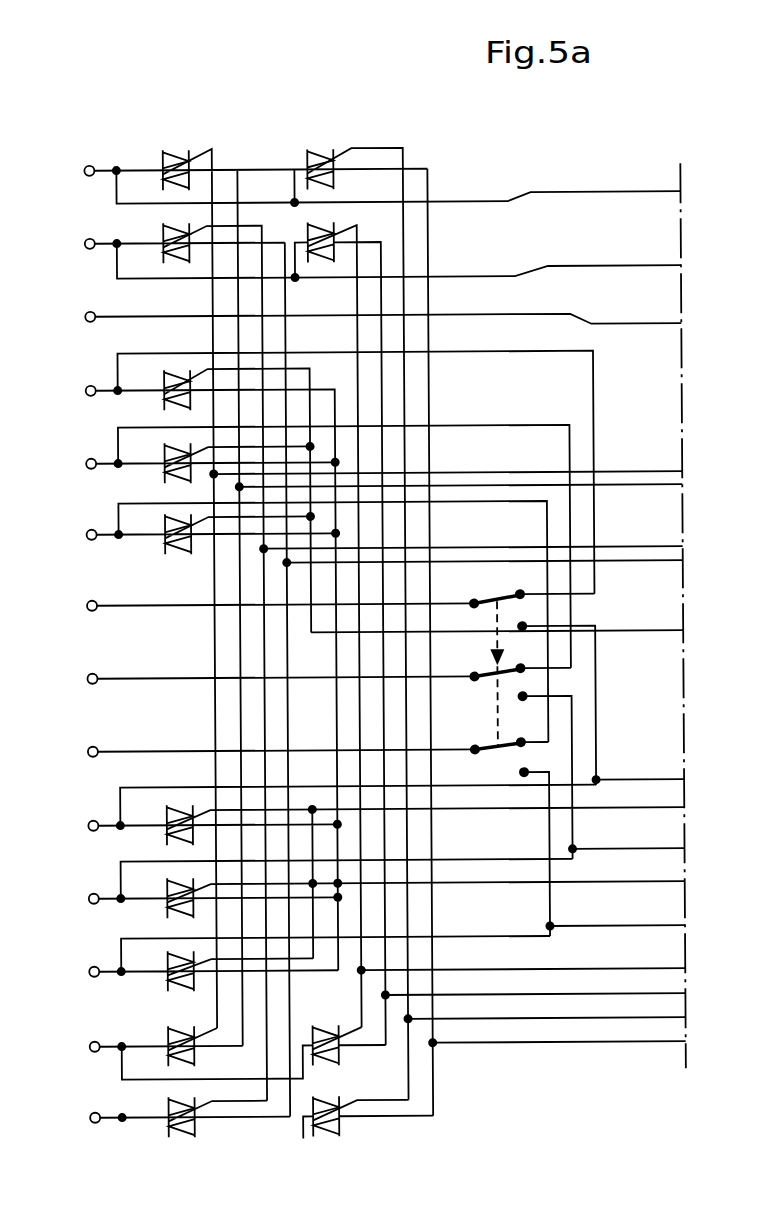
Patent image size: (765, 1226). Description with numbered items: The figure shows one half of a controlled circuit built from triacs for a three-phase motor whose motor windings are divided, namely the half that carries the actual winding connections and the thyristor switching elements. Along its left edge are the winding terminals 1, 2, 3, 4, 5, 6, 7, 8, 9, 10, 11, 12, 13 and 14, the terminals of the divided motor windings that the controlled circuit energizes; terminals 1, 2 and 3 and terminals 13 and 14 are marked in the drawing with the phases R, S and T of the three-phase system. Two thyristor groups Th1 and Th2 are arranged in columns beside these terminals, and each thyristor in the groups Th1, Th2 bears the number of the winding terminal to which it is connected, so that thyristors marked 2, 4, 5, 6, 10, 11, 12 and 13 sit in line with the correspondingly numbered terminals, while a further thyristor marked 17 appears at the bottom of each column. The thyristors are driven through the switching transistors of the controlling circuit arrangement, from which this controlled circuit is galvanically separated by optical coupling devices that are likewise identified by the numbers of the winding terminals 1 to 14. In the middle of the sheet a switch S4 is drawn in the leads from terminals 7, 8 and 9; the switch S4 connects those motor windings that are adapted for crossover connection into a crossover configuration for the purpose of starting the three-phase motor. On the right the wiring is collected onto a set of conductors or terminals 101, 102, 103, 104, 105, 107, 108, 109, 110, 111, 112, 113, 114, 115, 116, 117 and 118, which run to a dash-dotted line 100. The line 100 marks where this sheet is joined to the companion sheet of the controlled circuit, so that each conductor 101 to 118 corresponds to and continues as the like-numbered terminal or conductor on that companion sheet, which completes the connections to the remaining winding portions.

The winding terminal 1 is at (230, 633).
The winding terminal 2 is at (208, 661).
The winding terminal 3 is at (61, 318).
The winding terminal 4 is at (330, 661).
The winding terminal 5 is at (317, 547).
The winding terminal 6 is at (306, 619).
The winding terminal 7 is at (270, 604).
The winding terminal 8 is at (270, 677).
The winding terminal 9 is at (270, 750).
The winding terminal 10 is at (330, 872).
The winding terminal 11 is at (318, 889).
The winding terminal 12 is at (307, 962).
The winding terminal 13 is at (209, 1043).
The winding terminal 14 is at (233, 1120).
The triac 17 is at (253, 1107).
The thyristor circuit Th1 is at (173, 128).
The thyristor circuit Th2 is at (323, 128).
The switch S4 is at (497, 715).
The line 100 is at (683, 599).
The conductor 101 is at (628, 193).
The conductor 102 is at (634, 267).
The conductor 103 is at (634, 321).
The conductor 104 is at (655, 468).
The conductor 105 is at (639, 487).
The conductor 107 is at (655, 546).
The conductor 108 is at (636, 563).
The conductor 109 is at (648, 635).
The conductor 110 is at (647, 779).
The conductor 111 is at (659, 809).
The conductor 112 is at (610, 854).
The conductor 113 is at (660, 886).
The conductor 114 is at (600, 928).
The conductor 115 is at (512, 971).
The conductor 116 is at (566, 995).
The conductor 117 is at (620, 1021).
The conductor 118 is at (672, 1045).